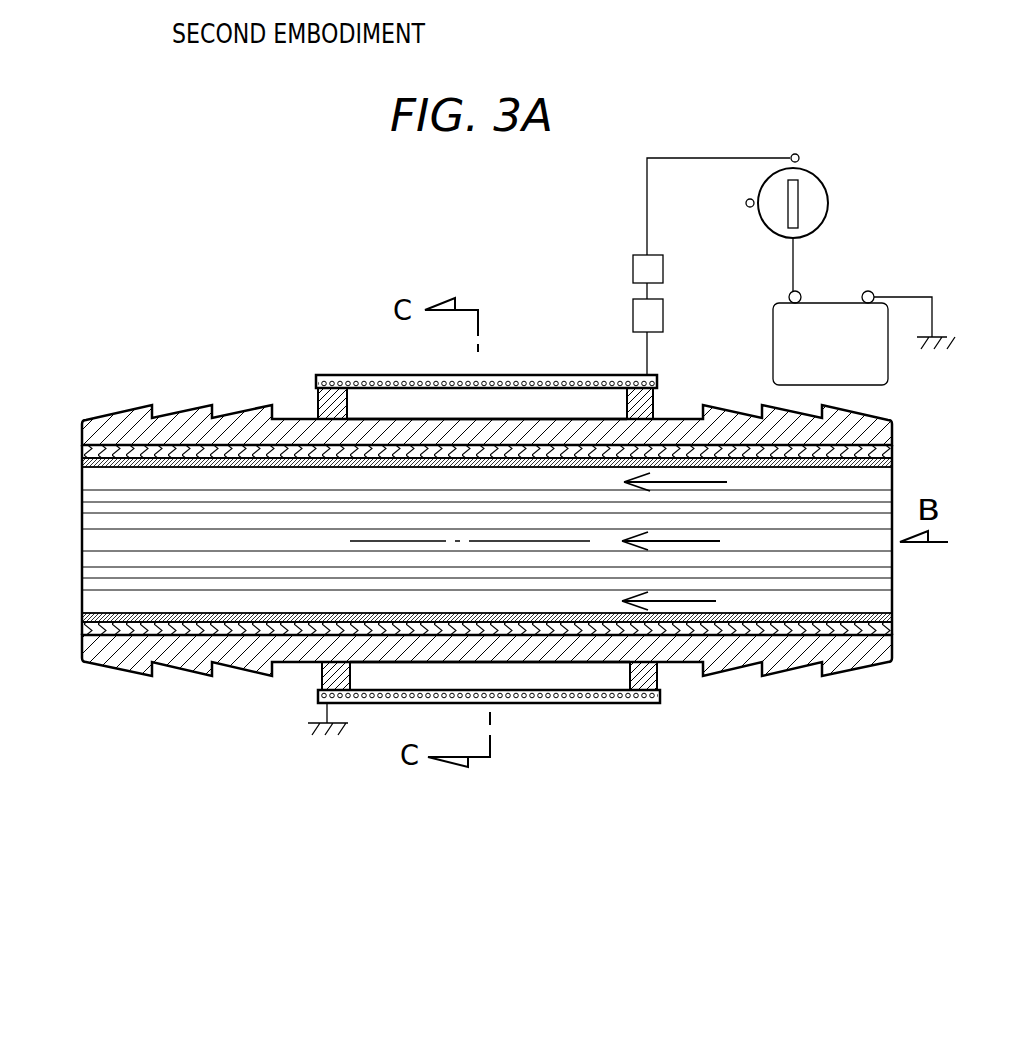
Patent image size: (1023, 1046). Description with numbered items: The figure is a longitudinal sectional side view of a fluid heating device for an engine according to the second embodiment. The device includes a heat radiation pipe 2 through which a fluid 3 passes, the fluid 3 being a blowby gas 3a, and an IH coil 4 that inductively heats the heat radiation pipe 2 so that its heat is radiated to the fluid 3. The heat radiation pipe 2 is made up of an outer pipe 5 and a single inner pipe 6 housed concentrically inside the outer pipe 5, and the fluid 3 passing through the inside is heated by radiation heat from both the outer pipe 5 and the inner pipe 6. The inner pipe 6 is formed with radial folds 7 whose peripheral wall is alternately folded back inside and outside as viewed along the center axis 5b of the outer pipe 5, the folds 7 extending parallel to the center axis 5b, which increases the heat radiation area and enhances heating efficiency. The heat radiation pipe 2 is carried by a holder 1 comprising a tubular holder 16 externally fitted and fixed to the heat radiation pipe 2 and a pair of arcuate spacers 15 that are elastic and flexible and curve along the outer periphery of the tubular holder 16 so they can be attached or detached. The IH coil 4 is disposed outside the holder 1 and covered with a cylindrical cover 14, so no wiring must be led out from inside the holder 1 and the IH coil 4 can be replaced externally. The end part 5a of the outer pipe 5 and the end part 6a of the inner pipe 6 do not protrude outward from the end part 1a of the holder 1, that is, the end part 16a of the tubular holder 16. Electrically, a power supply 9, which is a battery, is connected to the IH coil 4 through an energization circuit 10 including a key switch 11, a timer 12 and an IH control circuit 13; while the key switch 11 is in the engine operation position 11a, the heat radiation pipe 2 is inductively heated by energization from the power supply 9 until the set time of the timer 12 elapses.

The holder 1 is at (723, 340).
The end part of holder 1a is at (905, 390).
The heat radiation pipe 2 is at (305, 292).
The fluid 3 is at (707, 610).
The blowby gas 3a is at (690, 603).
The IH coil 4 is at (530, 374).
The outer pipe 5 is at (183, 441).
The end part of outer pipe 5a is at (88, 452).
The center axis of outer pipe 5b is at (497, 545).
The inner pipe 6 is at (210, 456).
The end part of inner pipe 6a is at (88, 460).
The radial folds 7 is at (860, 598).
The power supply 9 is at (830, 320).
The energization circuit 10 is at (847, 172).
The key switch 11 is at (843, 209).
The engine operation position 11a is at (788, 156).
The timer 12 is at (655, 270).
The IH control circuit 13 is at (653, 316).
The cylindrical cover 14 is at (578, 376).
The arcuate spacer 15 is at (318, 395).
The tubular holder 16 is at (673, 418).
The end part of tubular holder 16a is at (537, 491).